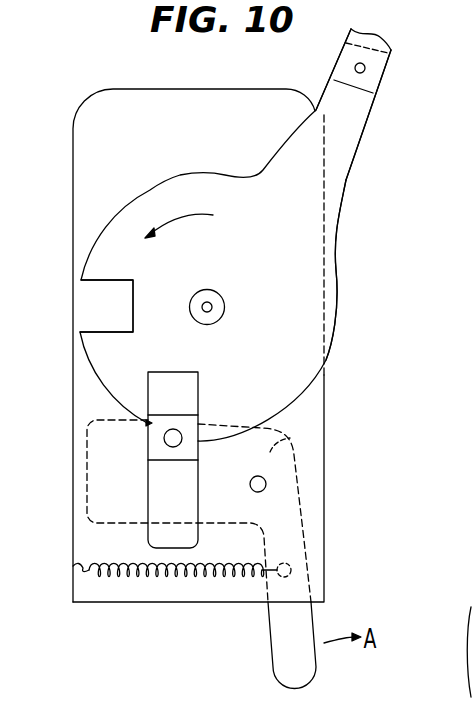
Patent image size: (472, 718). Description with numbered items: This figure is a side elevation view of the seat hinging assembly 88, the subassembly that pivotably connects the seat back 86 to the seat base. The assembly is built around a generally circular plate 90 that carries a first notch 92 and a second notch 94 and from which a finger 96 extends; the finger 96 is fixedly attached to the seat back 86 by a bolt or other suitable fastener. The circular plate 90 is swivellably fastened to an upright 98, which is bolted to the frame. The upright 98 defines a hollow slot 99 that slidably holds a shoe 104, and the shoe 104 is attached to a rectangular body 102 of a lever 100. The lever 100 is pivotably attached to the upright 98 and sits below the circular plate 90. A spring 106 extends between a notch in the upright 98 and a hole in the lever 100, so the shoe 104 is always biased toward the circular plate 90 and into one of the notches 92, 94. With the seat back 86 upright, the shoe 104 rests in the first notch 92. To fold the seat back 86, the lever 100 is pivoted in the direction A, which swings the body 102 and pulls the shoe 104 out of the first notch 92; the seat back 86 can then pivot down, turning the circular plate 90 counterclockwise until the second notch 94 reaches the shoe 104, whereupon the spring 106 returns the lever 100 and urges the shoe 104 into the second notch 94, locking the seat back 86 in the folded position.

The seat hinging assembly 88 is at (76, 87).
The upright 98 is at (185, 110).
The circular plate 90 is at (334, 307).
The finger 96 is at (360, 113).
The seat back 86 is at (389, 51).
The second notch 94 is at (134, 326).
The first notch 92 is at (192, 385).
The shoe 104 is at (155, 447).
The hollow slot 99 is at (147, 542).
The rectangular body 102 is at (293, 438).
The lever 100 is at (277, 640).
The spring 106 is at (138, 580).